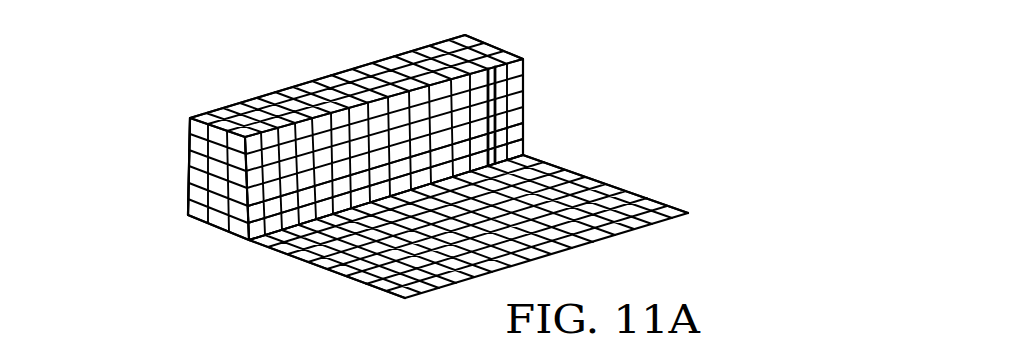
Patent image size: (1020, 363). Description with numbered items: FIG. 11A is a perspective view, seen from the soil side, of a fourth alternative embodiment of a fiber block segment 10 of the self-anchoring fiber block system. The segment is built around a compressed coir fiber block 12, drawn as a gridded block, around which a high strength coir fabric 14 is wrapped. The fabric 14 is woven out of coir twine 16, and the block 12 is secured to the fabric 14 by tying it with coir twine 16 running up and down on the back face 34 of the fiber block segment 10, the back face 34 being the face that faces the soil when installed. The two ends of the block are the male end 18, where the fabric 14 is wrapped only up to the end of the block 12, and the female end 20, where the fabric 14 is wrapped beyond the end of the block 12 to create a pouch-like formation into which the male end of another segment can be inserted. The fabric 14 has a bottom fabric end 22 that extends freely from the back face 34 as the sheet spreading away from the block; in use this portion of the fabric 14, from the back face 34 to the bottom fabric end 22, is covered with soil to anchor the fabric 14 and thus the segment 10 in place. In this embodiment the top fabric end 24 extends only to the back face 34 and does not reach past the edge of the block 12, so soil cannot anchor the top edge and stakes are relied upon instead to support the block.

The fiber block segment 10 is at (255, 70).
The compressed coir fiber block 12 is at (215, 207).
The high strength coir fabric 14 is at (521, 237).
The coir twine 16 is at (388, 162).
The male end 18 is at (148, 204).
The female end 20 is at (544, 81).
The bottom fabric end 22 is at (562, 251).
The top fabric end 24 is at (527, 64).
The back face 34 is at (346, 167).